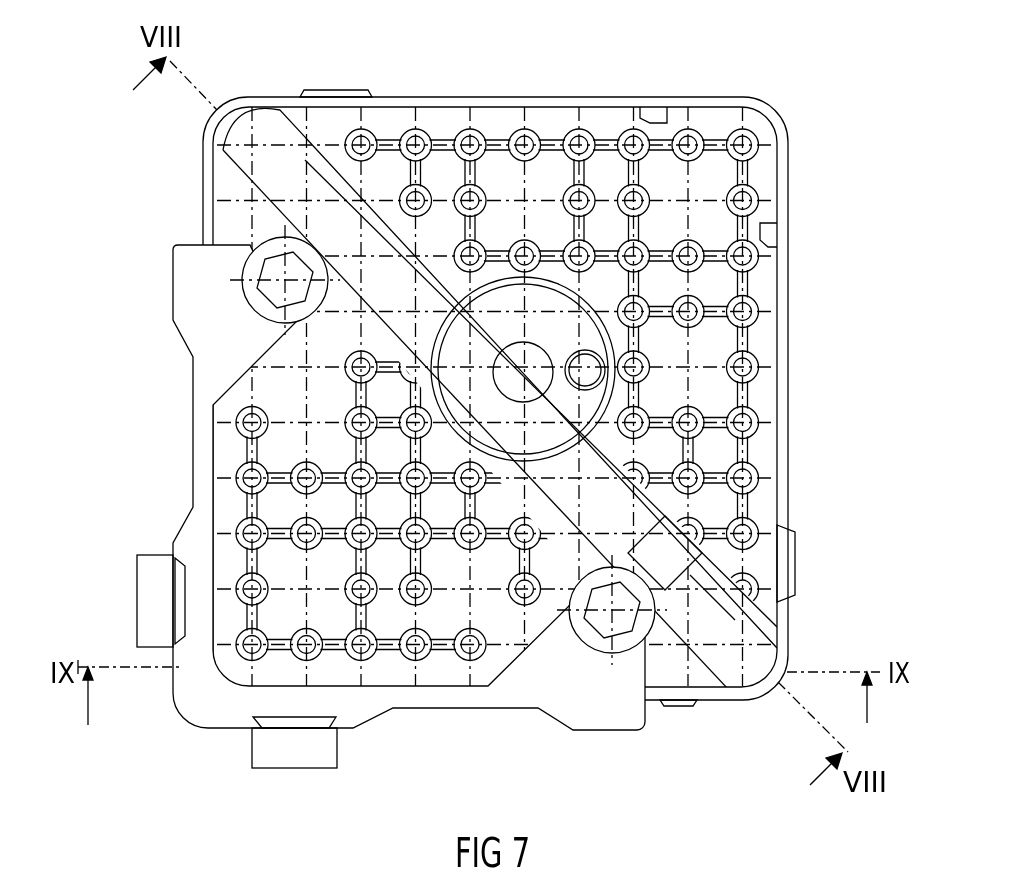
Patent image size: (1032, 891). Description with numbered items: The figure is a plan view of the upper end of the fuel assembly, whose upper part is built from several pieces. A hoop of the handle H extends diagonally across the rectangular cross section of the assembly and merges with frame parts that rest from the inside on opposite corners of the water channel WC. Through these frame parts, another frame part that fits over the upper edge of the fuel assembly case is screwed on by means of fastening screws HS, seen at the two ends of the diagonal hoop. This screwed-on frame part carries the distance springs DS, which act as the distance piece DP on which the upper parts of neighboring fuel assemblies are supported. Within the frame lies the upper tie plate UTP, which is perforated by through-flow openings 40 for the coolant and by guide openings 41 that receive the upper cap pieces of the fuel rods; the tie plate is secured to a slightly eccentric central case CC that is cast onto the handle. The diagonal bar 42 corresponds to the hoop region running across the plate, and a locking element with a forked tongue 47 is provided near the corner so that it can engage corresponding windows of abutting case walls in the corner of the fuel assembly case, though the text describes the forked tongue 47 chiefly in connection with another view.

The through-flow openings 40 is at (758, 176).
The guide openings 41 is at (750, 142).
The diagonal bar 42 is at (765, 636).
The forked tongue 47 is at (796, 568).
The upper tie plate UTP is at (768, 250).
The water channel WC is at (786, 342).
The central case CC is at (478, 338).
The handle H is at (745, 508).
The fastening screws HS is at (596, 652).
The distance springs DS is at (147, 597).
The distance piece DP is at (628, 733).